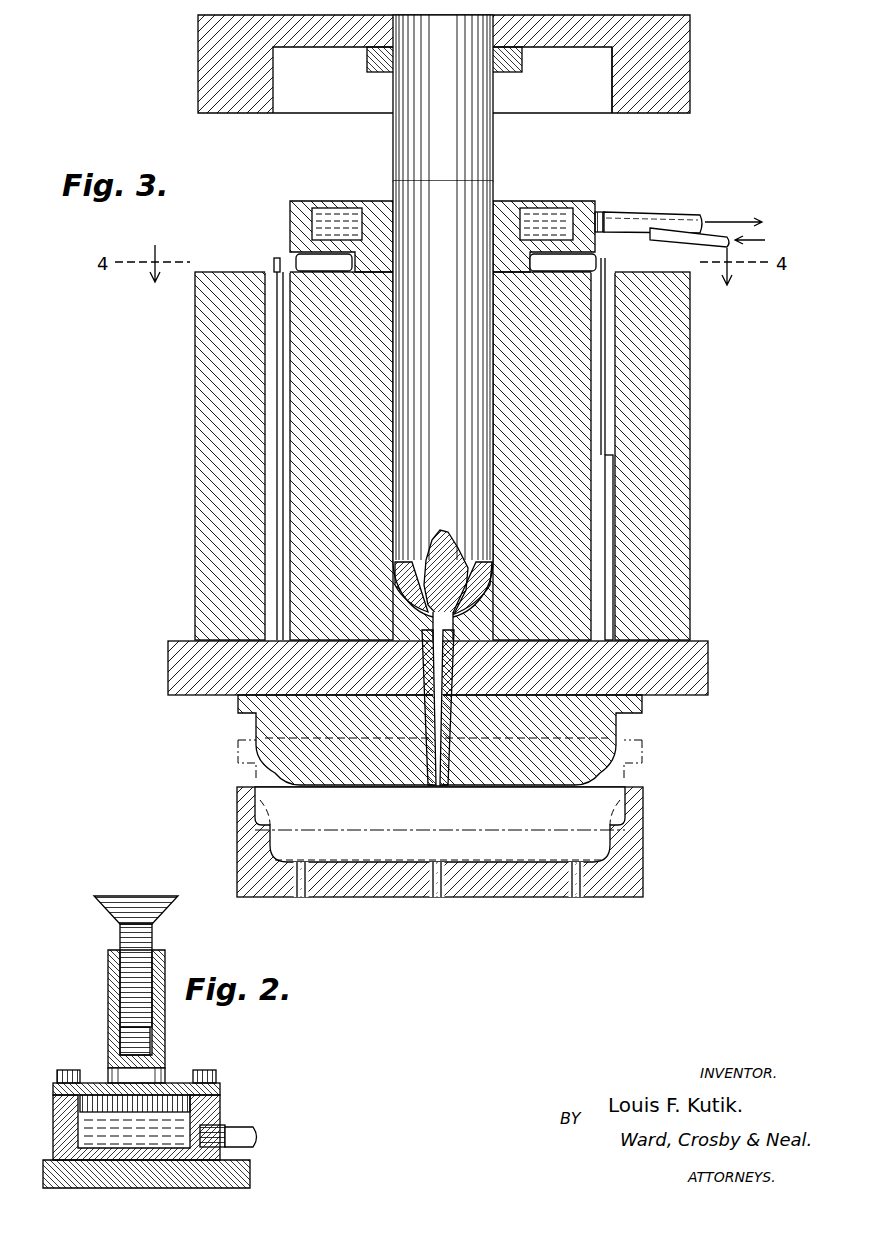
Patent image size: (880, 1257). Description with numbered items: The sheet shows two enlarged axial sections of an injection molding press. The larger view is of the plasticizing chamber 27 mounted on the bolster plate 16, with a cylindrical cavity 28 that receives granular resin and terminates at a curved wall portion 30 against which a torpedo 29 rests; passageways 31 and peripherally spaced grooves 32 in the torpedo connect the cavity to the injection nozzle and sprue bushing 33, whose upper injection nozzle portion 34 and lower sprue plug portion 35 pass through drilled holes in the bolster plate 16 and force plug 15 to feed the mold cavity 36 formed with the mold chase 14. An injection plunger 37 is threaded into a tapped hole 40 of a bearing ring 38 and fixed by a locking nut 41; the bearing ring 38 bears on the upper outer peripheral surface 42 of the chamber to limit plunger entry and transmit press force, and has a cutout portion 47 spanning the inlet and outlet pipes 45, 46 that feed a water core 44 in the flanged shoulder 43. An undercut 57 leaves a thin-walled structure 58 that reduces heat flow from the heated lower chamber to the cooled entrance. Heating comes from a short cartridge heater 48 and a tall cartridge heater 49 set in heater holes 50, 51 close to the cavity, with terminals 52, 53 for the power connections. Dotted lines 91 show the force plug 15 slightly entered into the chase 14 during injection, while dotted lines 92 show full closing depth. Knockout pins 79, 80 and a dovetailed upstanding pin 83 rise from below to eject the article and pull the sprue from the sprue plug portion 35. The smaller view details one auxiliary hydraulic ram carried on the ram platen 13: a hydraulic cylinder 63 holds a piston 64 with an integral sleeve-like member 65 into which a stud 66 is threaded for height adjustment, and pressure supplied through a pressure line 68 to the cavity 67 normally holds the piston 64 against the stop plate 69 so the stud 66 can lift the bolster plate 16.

In FIG. 2, the ram platen 13 is at (250, 1172).
In FIG. 3, the mold chase 14 is at (262, 845).
In FIG. 3, the force plug 15 is at (616, 704).
In FIG. 3, the bolster plate 16 is at (172, 665).
In FIG. 3, the plasticizing chamber 27 is at (690, 330).
In FIG. 3, the cylindrical cavity 28 is at (493, 366).
In FIG. 3, the torpedo 29 is at (442, 533).
In FIG. 3, the curved wall portion 30 is at (485, 590).
In FIG. 3, the passageways 31 is at (452, 535).
In FIG. 3, the peripherally spaced grooves 32 is at (403, 562).
In FIG. 3, the injection nozzle and sprue bushing 33 is at (455, 632).
In FIG. 3, the injection nozzle portion 34 is at (455, 672).
In FIG. 3, the sprue plug portion 35 is at (455, 755).
In FIG. 3, the mold cavity 36 is at (597, 848).
In FIG. 3, the injection plunger 37 is at (495, 141).
In FIG. 3, the bearing ring 38 is at (203, 95).
In FIG. 3, the drilled and tapped hole 40 is at (497, 30).
In FIG. 3, the locking nut 41 is at (383, 70).
In FIG. 3, the upper outer peripheral surface 42 is at (223, 272).
In FIG. 3, the flanged shoulder 43 is at (508, 201).
In FIG. 3, the water core 44 is at (333, 201).
In FIG. 3, the inlet pipe 45 is at (694, 238).
In FIG. 3, the outlet pipe 46 is at (643, 213).
In FIG. 3, the cutout portion 47 is at (680, 80).
In FIG. 3, the short cartridge heater 48 is at (618, 512).
In FIG. 3, the tall cartridge heater 49 is at (270, 478).
In FIG. 3, the heater hole 50 is at (618, 403).
In FIG. 3, the heater hole 51 is at (268, 376).
In FIG. 3, the heater terminal 52 is at (606, 262).
In FIG. 3, the heater terminal 53 is at (275, 262).
In FIG. 3, the undercut 57 is at (324, 263).
In FIG. 3, the thin-walled structure 58 is at (520, 262).
In FIG. 2, the hydraulic cylinder 63 is at (218, 1124).
In FIG. 2, the piston 64 is at (145, 1100).
In FIG. 2, the sleeve-like member 65 is at (108, 993).
In FIG. 2, the stud 66 is at (150, 942).
In FIG. 2, the cavity 67 is at (205, 1128).
In FIG. 2, the pressure line 68 is at (258, 1136).
In FIG. 2, the stop plate 69 is at (220, 1087).
In FIG. 3, the knockout pin 79 is at (303, 893).
In FIG. 3, the knockout pin 80 is at (585, 893).
In FIG. 3, the upstanding pin 83 is at (442, 893).
In FIG. 3, the dotted lines 91 is at (238, 745).
In FIG. 3, the dotted lines 92 is at (335, 858).